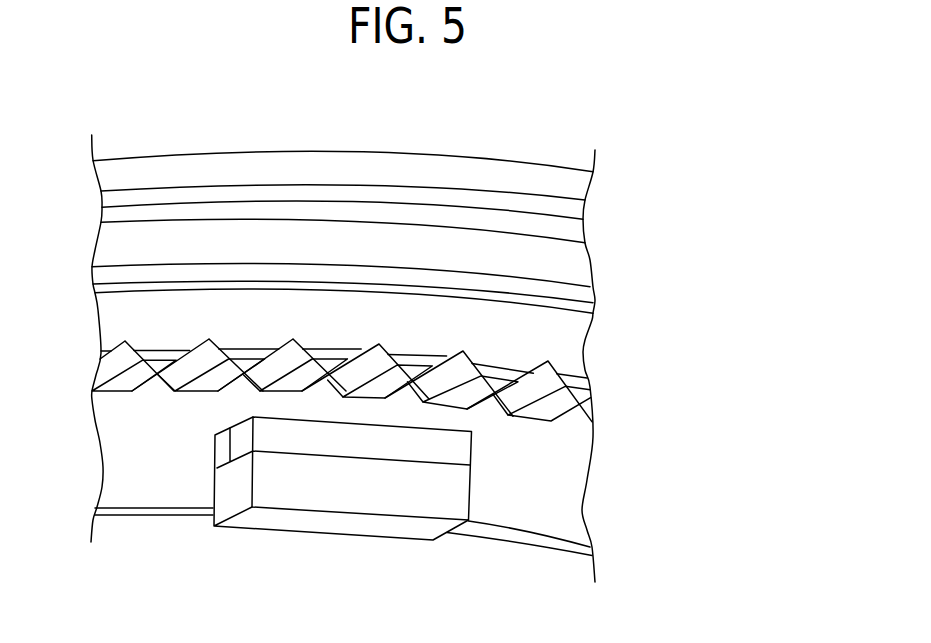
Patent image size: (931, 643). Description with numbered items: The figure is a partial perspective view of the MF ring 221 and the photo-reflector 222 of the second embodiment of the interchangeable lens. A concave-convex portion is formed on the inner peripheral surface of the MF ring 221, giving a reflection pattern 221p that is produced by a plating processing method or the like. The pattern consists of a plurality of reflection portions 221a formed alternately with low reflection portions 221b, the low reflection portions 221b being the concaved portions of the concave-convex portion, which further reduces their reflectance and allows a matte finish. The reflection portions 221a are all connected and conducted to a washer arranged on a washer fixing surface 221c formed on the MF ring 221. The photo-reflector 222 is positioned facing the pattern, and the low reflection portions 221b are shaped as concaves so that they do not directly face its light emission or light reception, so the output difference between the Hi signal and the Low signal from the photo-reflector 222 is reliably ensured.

The MF ring 221 is at (237, 247).
The washer fixing surface 221c is at (425, 333).
The reflection pattern 221p is at (439, 421).
The reflection portions 221a is at (557, 405).
The low reflection portions 221b is at (457, 373).
The photo-reflector 222 is at (361, 487).